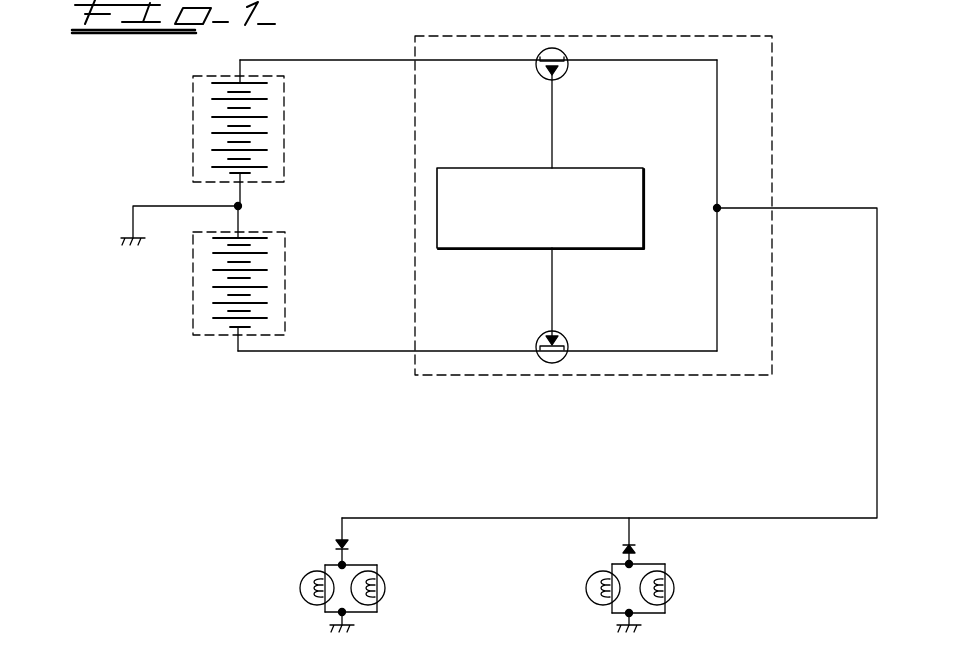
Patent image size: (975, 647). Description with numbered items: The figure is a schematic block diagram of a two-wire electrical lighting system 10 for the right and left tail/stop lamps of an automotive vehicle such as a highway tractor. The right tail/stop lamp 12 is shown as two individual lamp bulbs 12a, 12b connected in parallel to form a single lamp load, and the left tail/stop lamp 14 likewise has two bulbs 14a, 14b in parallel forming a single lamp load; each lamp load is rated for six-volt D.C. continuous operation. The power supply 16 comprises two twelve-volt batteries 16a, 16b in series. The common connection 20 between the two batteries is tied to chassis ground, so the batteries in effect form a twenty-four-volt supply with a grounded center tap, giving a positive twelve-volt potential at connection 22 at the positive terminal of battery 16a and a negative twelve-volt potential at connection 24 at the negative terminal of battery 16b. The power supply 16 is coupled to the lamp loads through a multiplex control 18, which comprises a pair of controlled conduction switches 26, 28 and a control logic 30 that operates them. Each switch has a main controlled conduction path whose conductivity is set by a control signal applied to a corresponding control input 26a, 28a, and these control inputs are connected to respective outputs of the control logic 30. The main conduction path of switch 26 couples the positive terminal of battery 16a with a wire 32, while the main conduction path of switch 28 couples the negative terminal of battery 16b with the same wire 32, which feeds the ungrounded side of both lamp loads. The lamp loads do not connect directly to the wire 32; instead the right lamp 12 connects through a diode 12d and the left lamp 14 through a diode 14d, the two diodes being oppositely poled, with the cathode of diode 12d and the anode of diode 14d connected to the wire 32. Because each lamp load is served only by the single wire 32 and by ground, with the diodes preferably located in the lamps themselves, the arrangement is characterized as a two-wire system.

The electrical lighting system 10 is at (814, 123).
The right tail/stop lamp 12 is at (653, 582).
The lamp bulb 12a is at (591, 601).
The lamp bulb 12b is at (672, 600).
The diode 12d is at (640, 549).
The left tail/stop lamp 14 is at (349, 578).
The lamp bulb 14a is at (300, 586).
The lamp bulb 14b is at (383, 596).
The diode 14d is at (337, 546).
The power supply 16 is at (298, 70).
The 12-volt battery 16a is at (194, 133).
The 12-volt battery 16b is at (194, 278).
The multiplex control 18 is at (415, 375).
The common connection 20 is at (241, 209).
The connection 22 is at (329, 60).
The connection 24 is at (285, 352).
The controlled conduction switch 26 is at (566, 71).
The control input 26a is at (540, 82).
The controlled conduction switch 28 is at (559, 334).
The control input 28a is at (548, 334).
The control logic 30 is at (540, 208).
The wire 32 is at (847, 210).